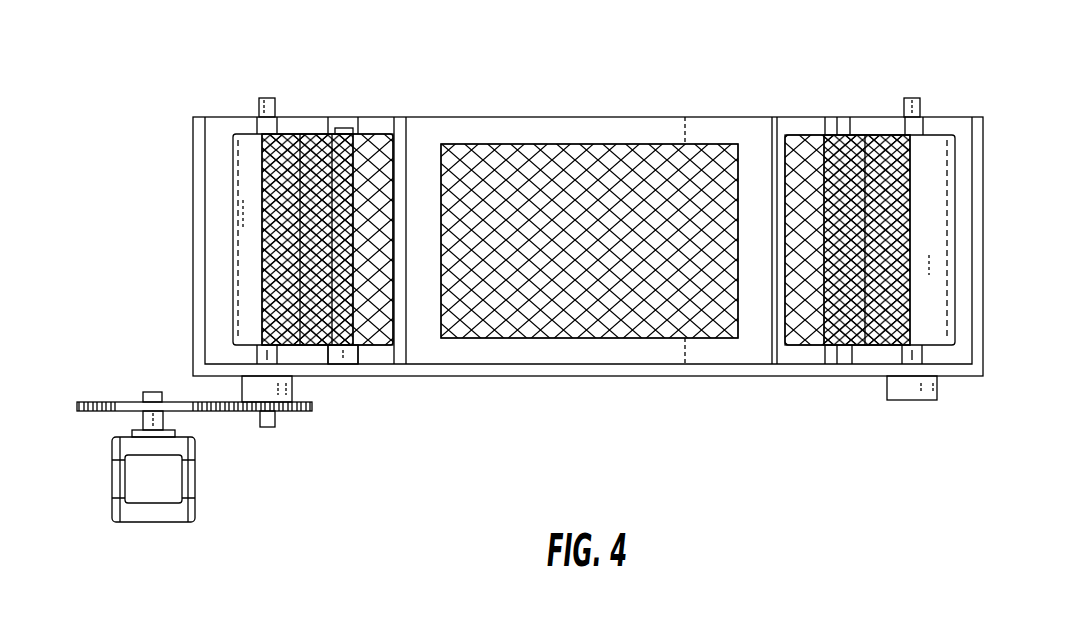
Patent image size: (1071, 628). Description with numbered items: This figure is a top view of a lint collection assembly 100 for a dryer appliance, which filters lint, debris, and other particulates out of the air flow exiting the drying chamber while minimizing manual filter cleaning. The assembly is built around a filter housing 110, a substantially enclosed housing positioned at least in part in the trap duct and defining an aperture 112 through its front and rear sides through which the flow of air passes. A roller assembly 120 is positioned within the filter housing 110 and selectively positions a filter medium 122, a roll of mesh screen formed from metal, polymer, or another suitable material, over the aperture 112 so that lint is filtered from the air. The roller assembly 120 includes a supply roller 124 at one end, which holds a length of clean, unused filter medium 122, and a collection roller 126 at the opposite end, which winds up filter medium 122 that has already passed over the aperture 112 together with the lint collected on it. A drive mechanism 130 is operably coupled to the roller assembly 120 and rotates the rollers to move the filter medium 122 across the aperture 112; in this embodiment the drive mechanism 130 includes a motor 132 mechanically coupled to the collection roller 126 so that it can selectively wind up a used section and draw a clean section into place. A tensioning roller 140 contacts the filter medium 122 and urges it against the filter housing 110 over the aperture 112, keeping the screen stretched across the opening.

The lint collection assembly 100 is at (157, 62).
The filter housing 110 is at (428, 130).
The aperture 112 is at (577, 162).
The roller assembly 120 is at (345, 462).
The filter medium 122 is at (678, 188).
The supply roller 124 is at (930, 153).
The collection roller 126 is at (248, 150).
The drive mechanism 130 is at (265, 448).
The motor 132 is at (153, 492).
The tensioning roller 140 is at (343, 358).